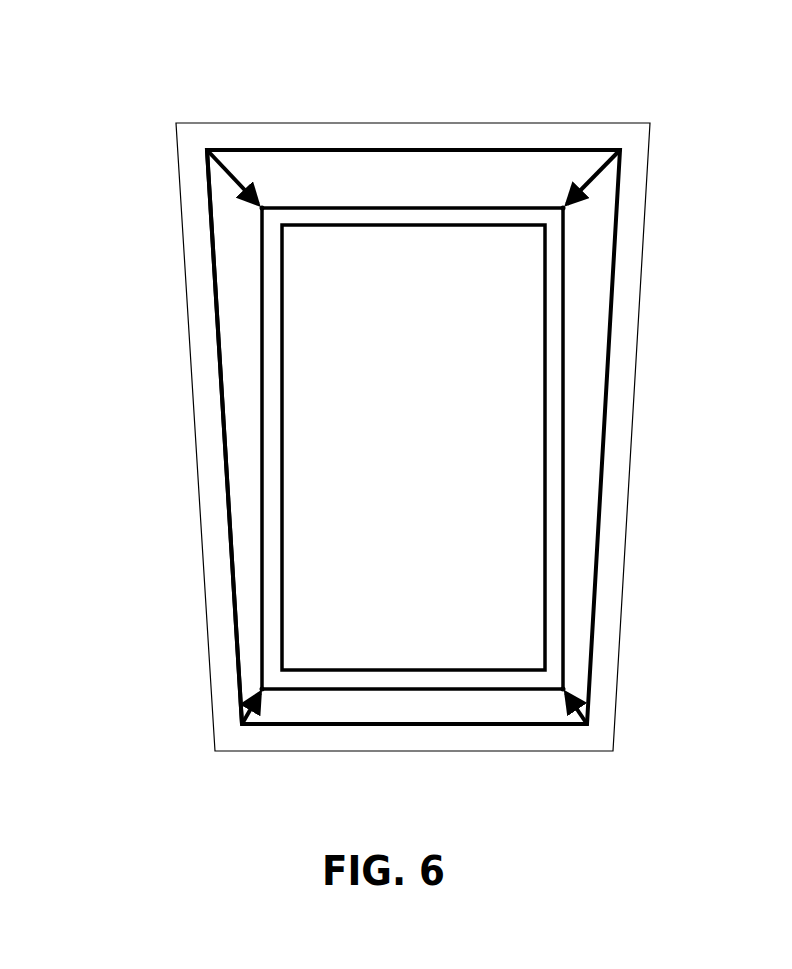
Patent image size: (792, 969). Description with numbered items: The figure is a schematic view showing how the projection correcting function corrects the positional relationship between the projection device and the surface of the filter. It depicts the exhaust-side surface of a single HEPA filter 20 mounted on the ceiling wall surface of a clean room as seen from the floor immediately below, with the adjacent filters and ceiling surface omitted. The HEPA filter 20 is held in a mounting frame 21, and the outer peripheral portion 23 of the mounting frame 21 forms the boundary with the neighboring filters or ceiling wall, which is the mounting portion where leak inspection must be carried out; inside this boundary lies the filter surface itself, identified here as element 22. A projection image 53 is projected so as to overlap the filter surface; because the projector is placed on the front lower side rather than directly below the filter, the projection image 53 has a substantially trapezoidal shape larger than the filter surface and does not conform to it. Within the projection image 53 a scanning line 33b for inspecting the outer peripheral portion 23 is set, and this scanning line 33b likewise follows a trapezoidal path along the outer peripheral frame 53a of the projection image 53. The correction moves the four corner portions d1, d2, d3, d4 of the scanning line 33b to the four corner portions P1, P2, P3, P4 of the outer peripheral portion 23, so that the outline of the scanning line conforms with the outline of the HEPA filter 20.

The projection image 53 is at (162, 249).
The outer peripheral frame of the projection image 53a is at (192, 395).
The scanning line 33b is at (225, 512).
The outer peripheral portion 23 is at (566, 275).
The HEPA filter 20 is at (575, 390).
The mounting frame 21 is at (552, 548).
The display area 22 is at (500, 437).
The corner portion of the scanning line d1 is at (242, 723).
The corner portion of the scanning line d2 is at (207, 150).
The corner portion of the scanning line d3 is at (588, 724).
The corner portion of the scanning line d4 is at (620, 150).
The corner portion of the outer peripheral portion P1 is at (263, 687).
The corner portion of the outer peripheral portion P2 is at (263, 210).
The corner portion of the outer peripheral portion P3 is at (562, 687).
The corner portion of the outer peripheral portion P4 is at (562, 210).